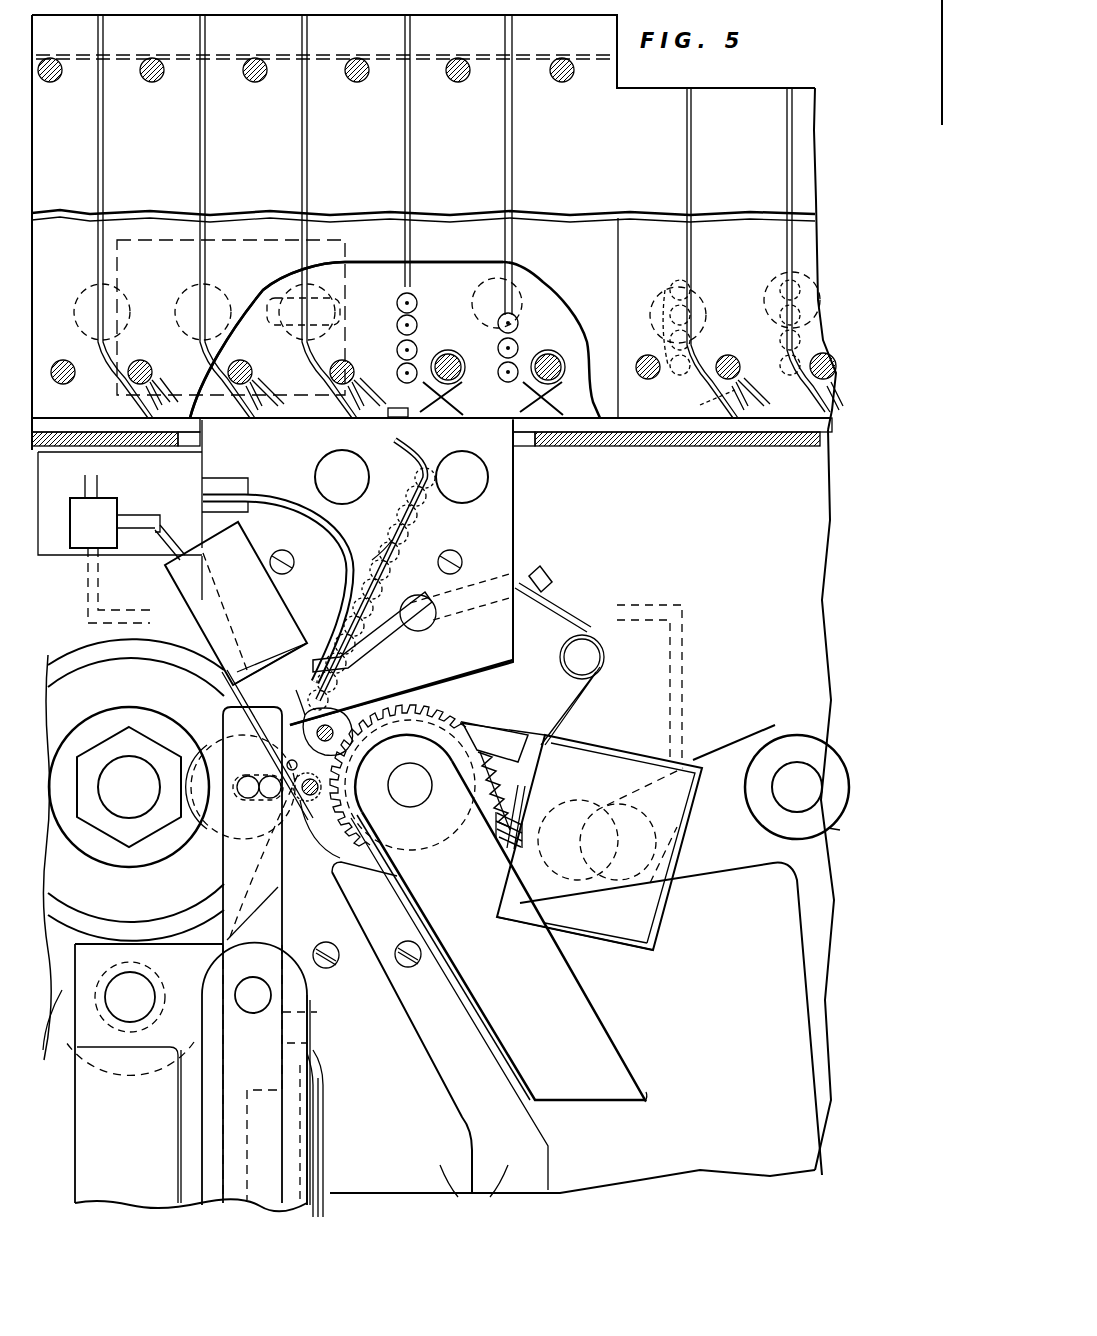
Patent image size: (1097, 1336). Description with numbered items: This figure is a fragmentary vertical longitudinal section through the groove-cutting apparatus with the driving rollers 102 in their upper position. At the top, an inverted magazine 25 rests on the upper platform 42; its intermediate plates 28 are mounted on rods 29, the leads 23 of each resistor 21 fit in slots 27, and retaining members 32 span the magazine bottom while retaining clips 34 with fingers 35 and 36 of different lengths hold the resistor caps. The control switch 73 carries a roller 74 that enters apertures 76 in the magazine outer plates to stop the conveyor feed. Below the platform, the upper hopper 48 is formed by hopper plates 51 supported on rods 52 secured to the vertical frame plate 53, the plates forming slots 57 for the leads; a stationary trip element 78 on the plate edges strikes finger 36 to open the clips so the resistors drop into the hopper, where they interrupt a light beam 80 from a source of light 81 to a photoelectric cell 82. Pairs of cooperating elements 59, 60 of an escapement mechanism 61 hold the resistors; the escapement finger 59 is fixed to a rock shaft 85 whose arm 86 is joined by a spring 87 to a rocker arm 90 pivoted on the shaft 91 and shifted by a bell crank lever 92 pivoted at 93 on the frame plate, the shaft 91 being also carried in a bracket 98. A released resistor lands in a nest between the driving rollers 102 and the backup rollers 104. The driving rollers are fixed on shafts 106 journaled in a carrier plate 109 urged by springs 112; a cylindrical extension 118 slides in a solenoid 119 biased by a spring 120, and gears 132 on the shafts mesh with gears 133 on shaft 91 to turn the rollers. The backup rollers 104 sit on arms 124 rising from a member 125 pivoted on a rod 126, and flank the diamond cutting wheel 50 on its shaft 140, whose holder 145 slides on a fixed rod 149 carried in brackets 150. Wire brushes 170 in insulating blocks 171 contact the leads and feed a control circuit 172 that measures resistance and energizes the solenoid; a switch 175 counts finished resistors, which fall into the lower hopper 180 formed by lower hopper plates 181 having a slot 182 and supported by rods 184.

The resistor 21 is at (418, 300).
The wire leads 23 is at (668, 337).
The magazine 25 is at (619, 86).
The slots 27 is at (200, 153).
The intermediate plates 28 is at (573, 106).
The rods 29 is at (60, 78).
The retaining members 32 is at (222, 54).
The retaining clips 34 is at (342, 372).
The finger 35 is at (440, 345).
The finger 36 is at (372, 398).
The upper platform 42 is at (678, 440).
The upper hopper 48 is at (518, 524).
The diamond cutting wheel 50 is at (88, 650).
The hopper plates 51 is at (240, 465).
The rods 52 is at (290, 556).
The vertical frame plate 53 is at (730, 1158).
The slots 57 is at (430, 545).
The escapement finger 59 is at (345, 650).
The escapement element 60 is at (303, 660).
The escapement mechanism 61 is at (552, 585).
The control switch 73 is at (335, 250).
The roller 74 is at (278, 292).
The apertures 76 is at (180, 305).
The stationary trip element 78 is at (398, 408).
The light beam 80 is at (408, 475).
The source of light 81 is at (332, 468).
The photoelectric cell 82 is at (480, 485).
The rock shaft 85 is at (426, 628).
The arm 86 is at (528, 575).
The spring 87 is at (582, 635).
The rocker arm 90 is at (598, 735).
The shaft 91 is at (418, 800).
The bell crank lever 92 is at (735, 855).
The pivot 93 is at (798, 768).
The bracket 98 is at (598, 1040).
The driving rollers 102 is at (330, 725).
The backup rollers 104 is at (210, 840).
The shafts 106 is at (308, 700).
The carrier plate 109 is at (502, 728).
The springs 112 is at (520, 760).
The cylindrical extension 118 is at (524, 800).
The solenoid 119 is at (640, 925).
The spring 120 is at (527, 846).
The arms 124 is at (280, 880).
The member 125 is at (282, 1074).
The rod 126 is at (270, 1005).
The gears 132 is at (360, 713).
The gears 133 is at (465, 722).
The shaft 140 is at (122, 805).
The holder 145 is at (50, 1034).
The fixed rod 149 is at (120, 1012).
The brackets 150 is at (158, 945).
The flexible wire brushes 170 is at (238, 692).
The insulating blocks 171 is at (180, 580).
The control circuit 172 is at (106, 505).
The switch 175 is at (100, 1125).
The lower hopper 180 is at (500, 1020).
The lower hopper plates 181 is at (474, 1196).
The slot 182 is at (422, 1048).
The rods 184 is at (327, 967).